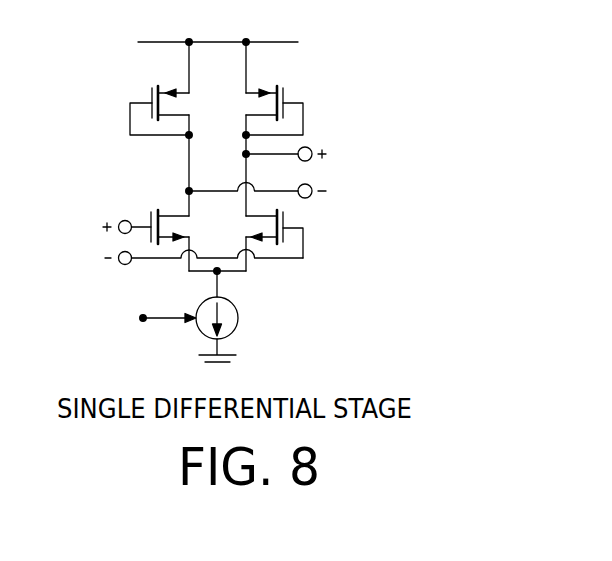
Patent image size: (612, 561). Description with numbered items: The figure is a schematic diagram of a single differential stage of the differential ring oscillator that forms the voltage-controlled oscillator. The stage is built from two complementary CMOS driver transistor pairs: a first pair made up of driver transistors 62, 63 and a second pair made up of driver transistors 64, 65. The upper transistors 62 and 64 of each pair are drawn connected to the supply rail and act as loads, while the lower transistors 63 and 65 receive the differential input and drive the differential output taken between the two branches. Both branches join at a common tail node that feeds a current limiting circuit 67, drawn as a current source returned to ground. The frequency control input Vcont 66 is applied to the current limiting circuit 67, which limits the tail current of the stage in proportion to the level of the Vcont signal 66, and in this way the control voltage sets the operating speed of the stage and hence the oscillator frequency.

The driver transistor 62 is at (151, 97).
The driver transistor 63 is at (151, 213).
The driver transistor 64 is at (284, 97).
The driver transistor 65 is at (284, 222).
The frequency control input (Vcont) 66 is at (214, 206).
The current limiting circuit 67 is at (238, 323).